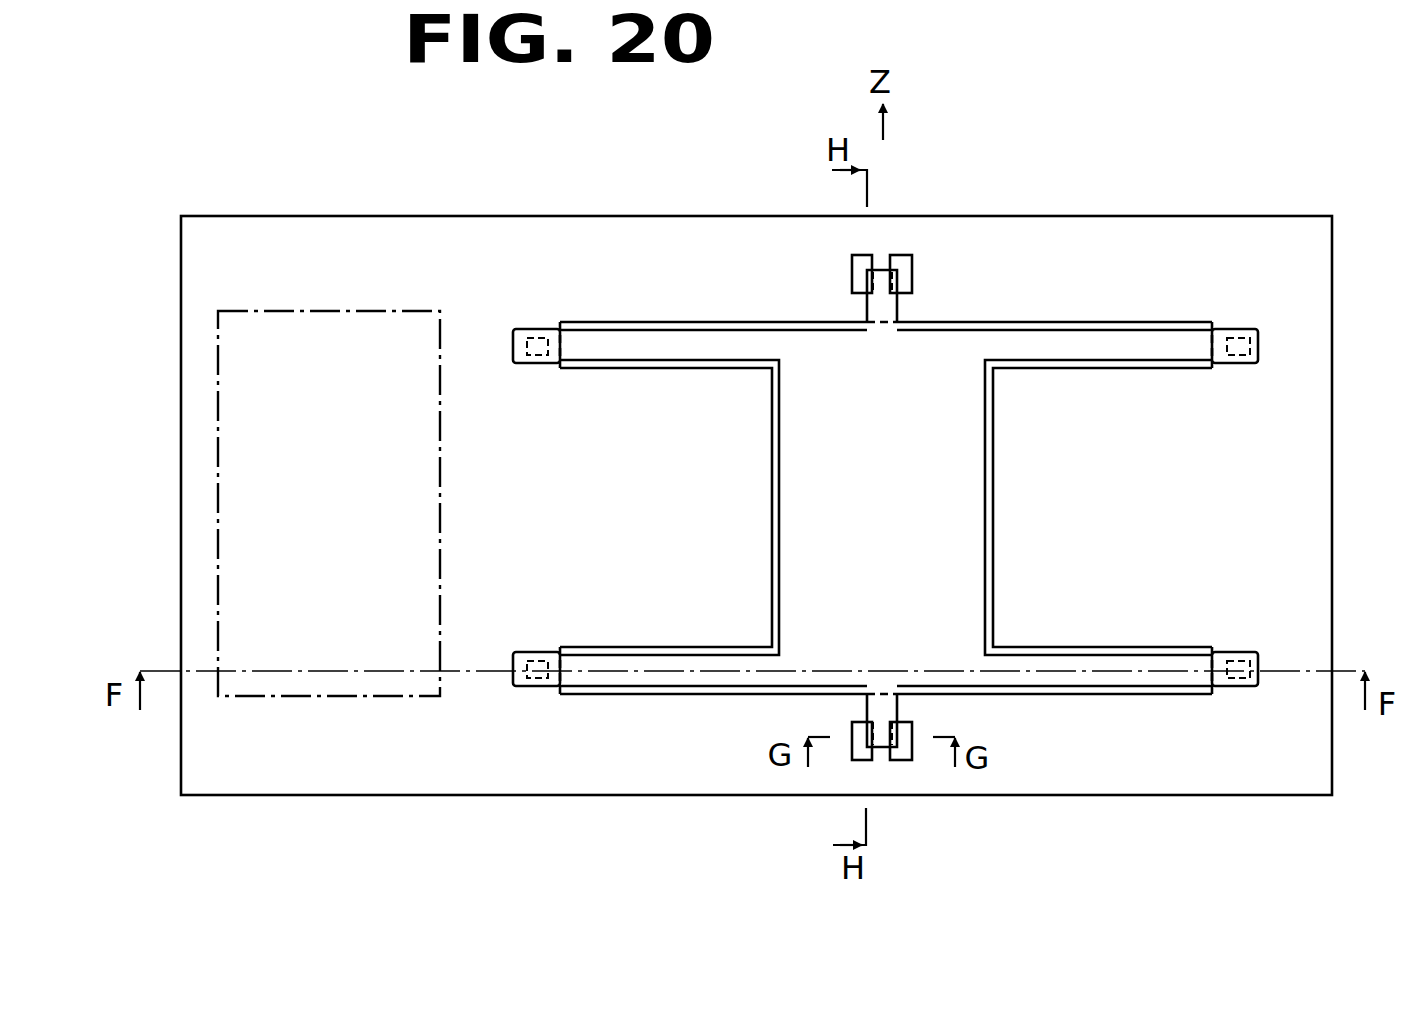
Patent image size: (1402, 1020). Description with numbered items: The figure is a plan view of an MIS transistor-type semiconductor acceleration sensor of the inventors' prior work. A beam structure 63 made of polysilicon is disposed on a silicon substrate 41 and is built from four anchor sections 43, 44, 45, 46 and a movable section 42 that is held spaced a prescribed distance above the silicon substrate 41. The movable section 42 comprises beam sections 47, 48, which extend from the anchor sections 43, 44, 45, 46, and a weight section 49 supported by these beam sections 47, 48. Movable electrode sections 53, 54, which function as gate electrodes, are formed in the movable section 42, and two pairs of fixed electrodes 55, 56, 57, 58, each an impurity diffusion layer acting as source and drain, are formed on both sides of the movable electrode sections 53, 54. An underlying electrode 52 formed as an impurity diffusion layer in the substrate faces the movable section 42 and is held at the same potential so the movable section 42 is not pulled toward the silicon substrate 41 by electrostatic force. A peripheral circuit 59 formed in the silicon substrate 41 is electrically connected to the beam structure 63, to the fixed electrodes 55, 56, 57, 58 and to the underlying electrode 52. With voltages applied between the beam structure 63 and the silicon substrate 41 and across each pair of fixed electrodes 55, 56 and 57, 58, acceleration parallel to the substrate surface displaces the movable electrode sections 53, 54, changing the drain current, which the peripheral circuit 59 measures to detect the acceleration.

The silicon substrate 41 is at (1320, 768).
The movable section 42 is at (973, 472).
The anchor section 43 is at (527, 329).
The anchor section 44 is at (1240, 330).
The anchor section 45 is at (535, 650).
The anchor section 46 is at (1237, 660).
The beam section 47 is at (1085, 345).
The beam section 48 is at (1088, 678).
The weight section 49 is at (972, 556).
The underlying electrode 52 is at (995, 615).
The movable electrode section 53 is at (883, 268).
The movable electrode section 54 is at (880, 747).
The fixed electrode 55 is at (852, 270).
The fixed electrode 56 is at (913, 266).
The fixed electrode 57 is at (852, 753).
The fixed electrode 58 is at (912, 757).
The peripheral circuit 59 is at (440, 515).
The beam structure 63 is at (1032, 319).